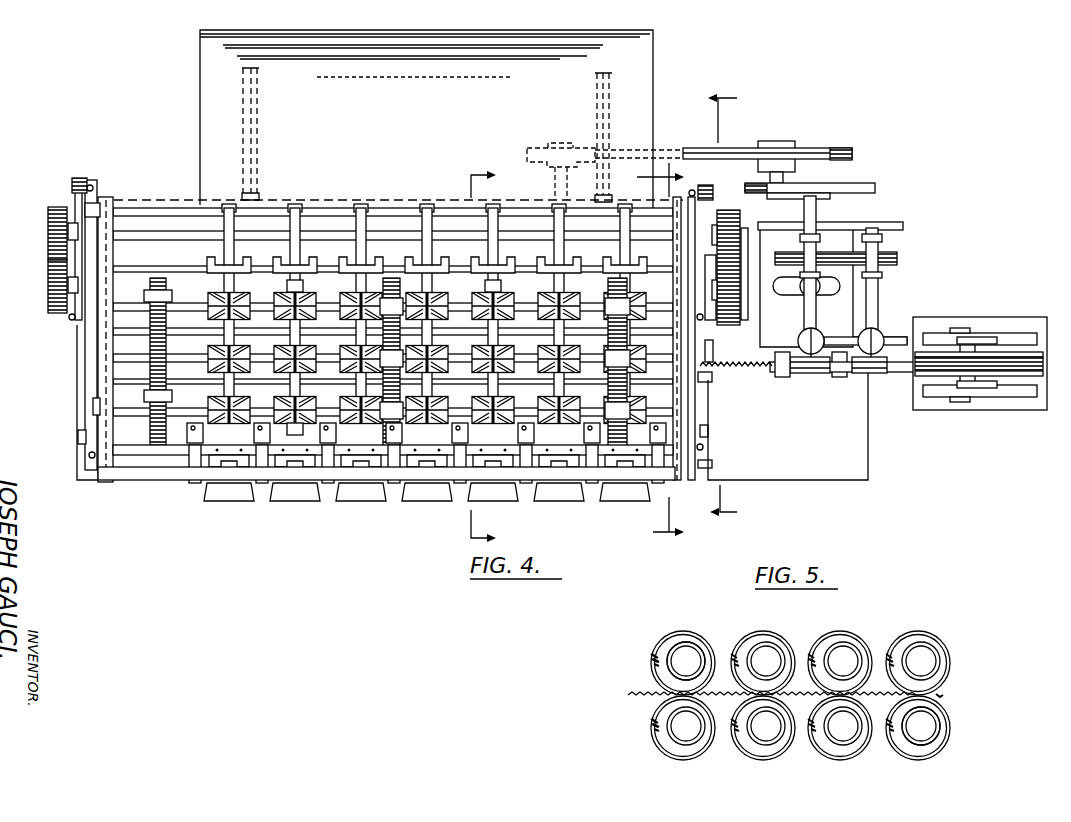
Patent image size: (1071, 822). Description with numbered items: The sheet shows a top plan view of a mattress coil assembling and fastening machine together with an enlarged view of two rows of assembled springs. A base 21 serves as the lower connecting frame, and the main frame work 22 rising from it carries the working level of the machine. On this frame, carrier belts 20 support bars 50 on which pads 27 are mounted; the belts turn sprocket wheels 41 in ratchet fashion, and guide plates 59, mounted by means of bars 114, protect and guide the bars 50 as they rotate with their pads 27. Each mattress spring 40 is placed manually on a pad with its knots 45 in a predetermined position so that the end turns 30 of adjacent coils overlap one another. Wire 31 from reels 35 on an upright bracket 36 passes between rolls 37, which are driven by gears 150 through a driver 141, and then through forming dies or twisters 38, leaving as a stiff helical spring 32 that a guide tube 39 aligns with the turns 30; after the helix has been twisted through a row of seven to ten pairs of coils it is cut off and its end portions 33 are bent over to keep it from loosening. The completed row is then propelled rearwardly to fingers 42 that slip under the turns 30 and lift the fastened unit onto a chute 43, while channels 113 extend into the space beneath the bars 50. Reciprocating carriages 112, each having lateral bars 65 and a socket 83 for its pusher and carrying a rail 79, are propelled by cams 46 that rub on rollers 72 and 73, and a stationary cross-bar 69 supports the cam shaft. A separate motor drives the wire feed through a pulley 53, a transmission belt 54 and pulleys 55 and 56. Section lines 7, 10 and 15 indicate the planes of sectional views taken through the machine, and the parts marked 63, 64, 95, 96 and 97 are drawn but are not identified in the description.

In FIG. 4, the section line 7- 7 is at (494, 359).
In FIG. 4, the section line 10- 10 is at (648, 354).
In FIG. 4, the section line 15- 15 is at (723, 306).
In FIG. 4, the carrier belts 20 is at (391, 290).
In FIG. 4, the base 21 is at (942, 318).
In FIG. 4, the main frame work 22 is at (77, 466).
In FIG. 4, the pads 27 is at (240, 266).
In FIG. 5, the end turns 30 is at (767, 636).
In FIG. 4, the wire 31 is at (897, 373).
In FIG. 4, the helical spring 32 is at (744, 373).
In FIG. 5, the helical spring 32 is at (630, 696).
In FIG. 5, the end portions 33 is at (943, 699).
In FIG. 4, the reels 35 is at (945, 380).
In FIG. 4, the upright bracket 36 is at (995, 333).
In FIG. 4, the rolls 37 is at (816, 373).
In FIG. 4, the forming dies 38 is at (782, 378).
In FIG. 4, the guide tube 39 is at (712, 345).
In FIG. 5, the mattress spring 40 is at (690, 657).
In FIG. 4, the sprocket wheels 41 is at (168, 288).
In FIG. 4, the fingers 42 is at (548, 235).
In FIG. 4, the chute 43 is at (655, 90).
In FIG. 5, the knots 45 is at (655, 663).
In FIG. 4, the cams 46 is at (75, 202).
In FIG. 4, the bars 50 is at (127, 303).
In FIG. 4, the pulley 53 is at (585, 150).
In FIG. 4, the transmission belt 54 is at (705, 152).
In FIG. 4, the pulley 55 is at (806, 148).
In FIG. 4, the pulley 56 is at (870, 186).
In FIG. 4, the guide plates 59 is at (300, 285).
In FIG. 4, the post 63 is at (816, 327).
In FIG. 4, the cross bar 64 is at (900, 226).
In FIG. 4, the lateral bars 65 is at (91, 184).
In FIG. 4, the stationary cross-bar 69 is at (100, 205).
In FIG. 4, the roller 72 is at (75, 325).
In FIG. 4, the roller 73 is at (78, 182).
In FIG. 4, the rail 79 is at (738, 384).
In FIG. 4, the socket 83 is at (80, 437).
In FIG. 4, the lower sprocket 95 is at (50, 310).
In FIG. 4, the gear 96 is at (60, 276).
In FIG. 4, the upper sprocket 97 is at (48, 220).
In FIG. 4, the carriages 112 is at (80, 401).
In FIG. 4, the channels 113 is at (390, 486).
In FIG. 4, the bars 114 is at (123, 380).
In FIG. 4, the driver 141 is at (762, 300).
In FIG. 4, the gears 150 is at (897, 259).